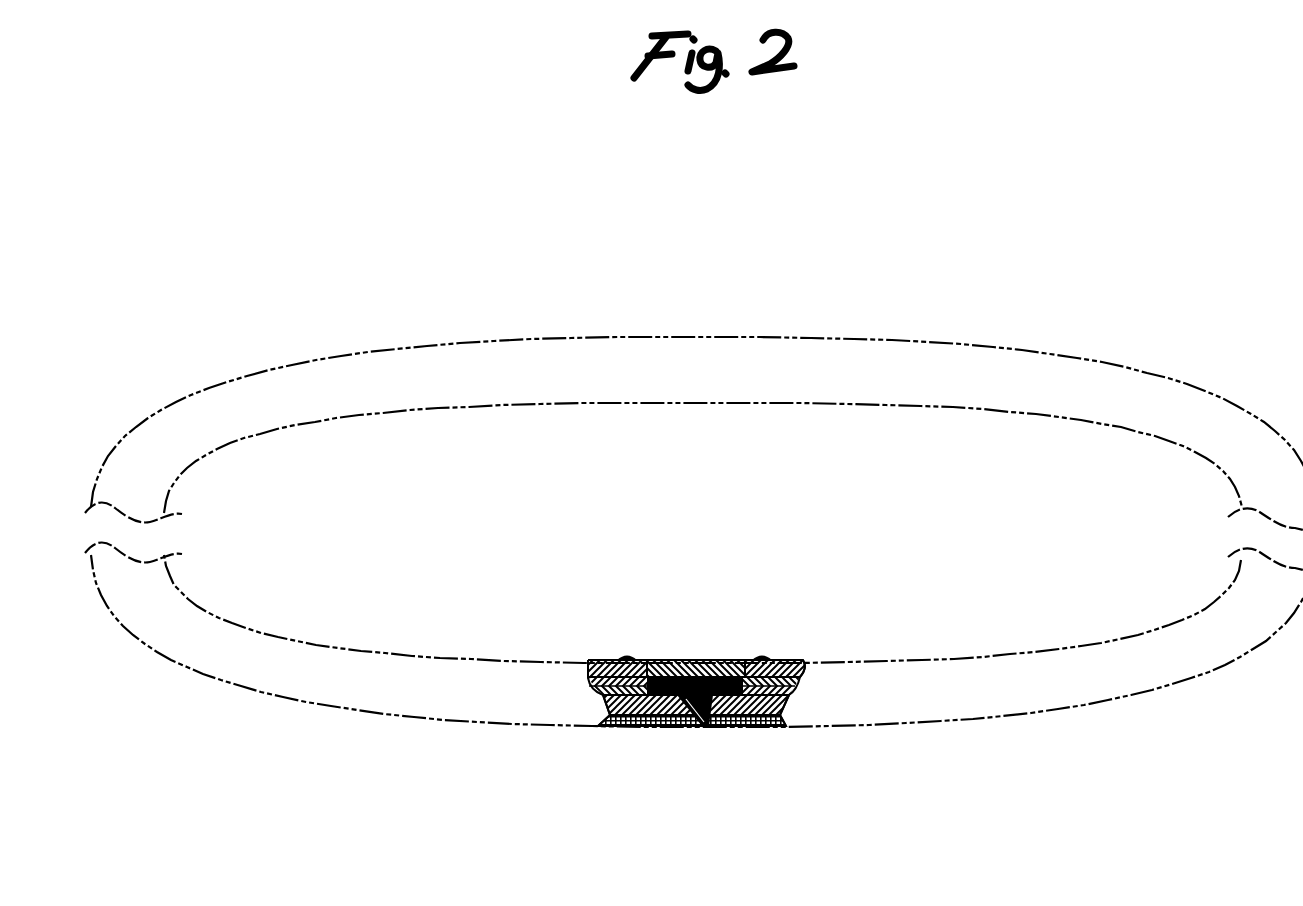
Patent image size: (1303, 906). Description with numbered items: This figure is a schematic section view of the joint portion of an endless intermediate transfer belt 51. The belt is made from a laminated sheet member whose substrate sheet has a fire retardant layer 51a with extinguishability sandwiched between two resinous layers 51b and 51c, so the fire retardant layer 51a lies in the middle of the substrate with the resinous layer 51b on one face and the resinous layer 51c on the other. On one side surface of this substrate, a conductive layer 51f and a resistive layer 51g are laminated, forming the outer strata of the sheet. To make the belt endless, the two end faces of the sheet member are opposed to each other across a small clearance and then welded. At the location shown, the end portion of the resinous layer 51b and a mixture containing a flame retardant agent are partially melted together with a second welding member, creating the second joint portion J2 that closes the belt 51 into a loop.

The intermediate transfer belt 51 is at (942, 341).
The second joint portion J2 is at (703, 677).
The fire retardant layer 51a is at (803, 687).
The resinous layer 51b is at (797, 664).
The resinous layer 51c is at (783, 708).
The conductive layer 51f is at (603, 715).
The resistive layer 51g is at (632, 727).